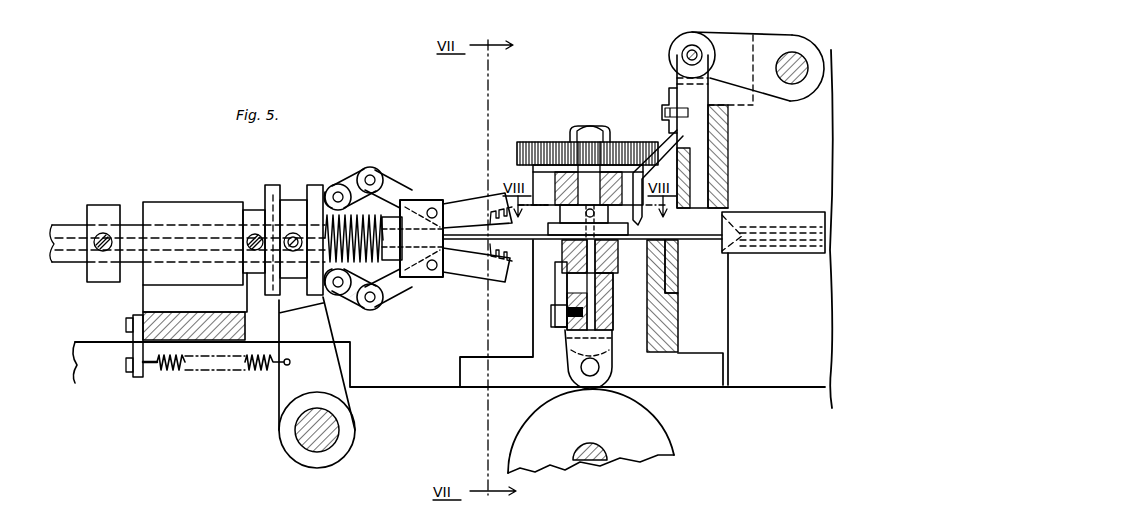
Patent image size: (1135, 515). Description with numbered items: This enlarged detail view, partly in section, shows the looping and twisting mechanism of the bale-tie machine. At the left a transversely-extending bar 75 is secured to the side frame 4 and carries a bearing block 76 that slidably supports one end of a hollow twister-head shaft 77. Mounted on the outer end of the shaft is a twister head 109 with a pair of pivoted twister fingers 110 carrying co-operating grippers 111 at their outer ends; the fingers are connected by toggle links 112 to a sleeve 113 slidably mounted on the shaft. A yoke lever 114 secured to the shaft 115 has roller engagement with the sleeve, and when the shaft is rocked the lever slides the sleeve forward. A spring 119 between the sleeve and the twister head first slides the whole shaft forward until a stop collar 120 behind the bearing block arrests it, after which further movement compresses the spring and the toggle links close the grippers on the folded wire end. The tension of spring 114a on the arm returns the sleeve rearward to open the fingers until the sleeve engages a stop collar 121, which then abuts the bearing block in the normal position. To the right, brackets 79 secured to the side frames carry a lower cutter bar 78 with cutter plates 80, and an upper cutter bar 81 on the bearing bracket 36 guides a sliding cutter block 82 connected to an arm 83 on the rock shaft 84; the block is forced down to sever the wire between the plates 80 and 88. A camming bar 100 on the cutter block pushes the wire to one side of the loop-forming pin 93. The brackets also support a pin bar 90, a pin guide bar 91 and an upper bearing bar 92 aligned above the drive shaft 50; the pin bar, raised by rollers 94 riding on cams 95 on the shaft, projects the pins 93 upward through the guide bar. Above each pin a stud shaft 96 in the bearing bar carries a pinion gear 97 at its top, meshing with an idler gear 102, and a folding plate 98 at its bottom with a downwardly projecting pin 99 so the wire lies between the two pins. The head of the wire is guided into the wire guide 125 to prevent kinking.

The side frame 4 is at (383, 387).
The bearing bracket 36 is at (790, 372).
The drive shaft 50 is at (596, 462).
The transversely-extending bar 75 is at (143, 318).
The bearing block 76 is at (165, 205).
The twister-head shaft 77 is at (70, 222).
The lower cutter bar 78 is at (678, 338).
The bracket 79 is at (690, 370).
The cutter plate 80 is at (680, 258).
The upper cutter bar 81 is at (726, 175).
The cutter block 82 is at (712, 125).
The arm 83 is at (724, 38).
The rock shaft 84 is at (801, 57).
The cutter plate 88 is at (730, 196).
The pin bar 90 is at (558, 322).
The pin guide bar 91 is at (612, 290).
The upper bearing bar 92 is at (553, 148).
The loop-forming pin 93 is at (600, 322).
The roller 94 is at (612, 377).
The cam 95 is at (640, 446).
The stud shaft 96 is at (600, 184).
The pinion gear 97 is at (590, 127).
The folding plate 98 is at (542, 241).
The downwardly projecting pin 99 is at (612, 244).
The camming bar 100 is at (662, 108).
The idler gear 102 is at (520, 152).
The twister head 109 is at (428, 200).
The twister finger 110 is at (395, 187).
The gripper 111 is at (492, 250).
The link 112 is at (357, 184).
The sleeve 113 is at (289, 215).
The yoke lever 114 is at (278, 388).
The spring 114a is at (189, 372).
The shaft 115 is at (293, 431).
The spring 119 is at (394, 300).
The stop collar 120 is at (113, 208).
The stop collar 121 is at (250, 214).
The wire guide 125 is at (800, 215).